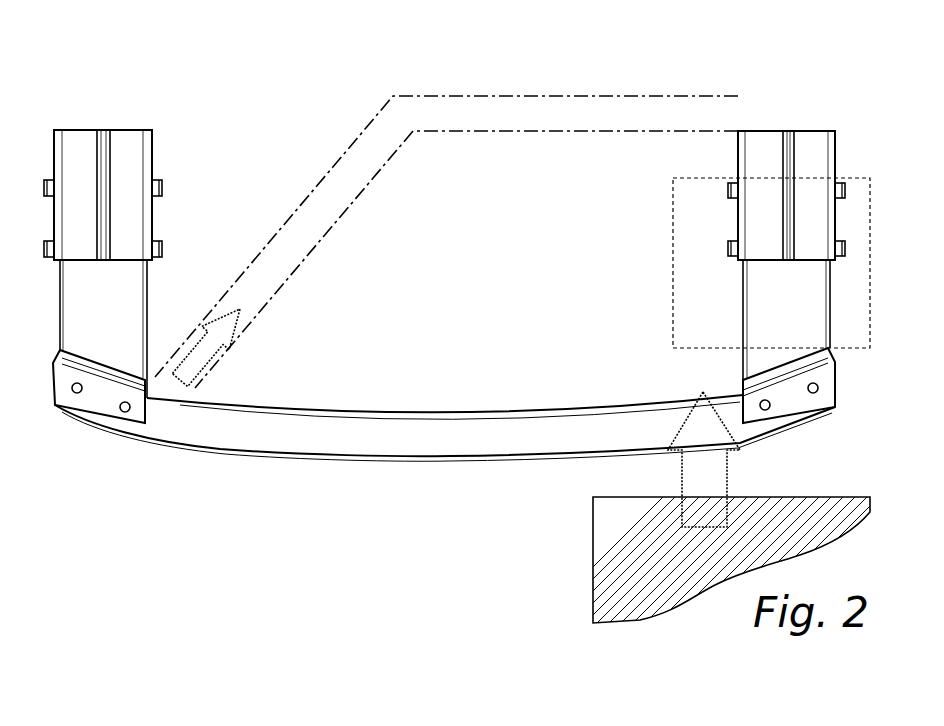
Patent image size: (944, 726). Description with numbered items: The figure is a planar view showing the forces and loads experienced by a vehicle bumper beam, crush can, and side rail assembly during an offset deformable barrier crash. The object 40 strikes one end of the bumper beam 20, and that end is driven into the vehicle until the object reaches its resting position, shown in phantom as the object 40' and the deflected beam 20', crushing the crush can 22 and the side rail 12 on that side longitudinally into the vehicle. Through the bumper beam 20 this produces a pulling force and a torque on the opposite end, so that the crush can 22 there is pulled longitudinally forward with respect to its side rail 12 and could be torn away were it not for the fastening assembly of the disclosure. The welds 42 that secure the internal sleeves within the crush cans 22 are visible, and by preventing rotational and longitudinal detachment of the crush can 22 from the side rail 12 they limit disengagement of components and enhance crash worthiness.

The side rail 12 is at (785, 110).
The bumper beam 20 is at (445, 502).
The object at resting position 20' is at (446, 196).
The crush can 22 is at (837, 285).
The object 40 is at (714, 516).
The object 40' is at (771, 326).
The welds 42 is at (170, 197).